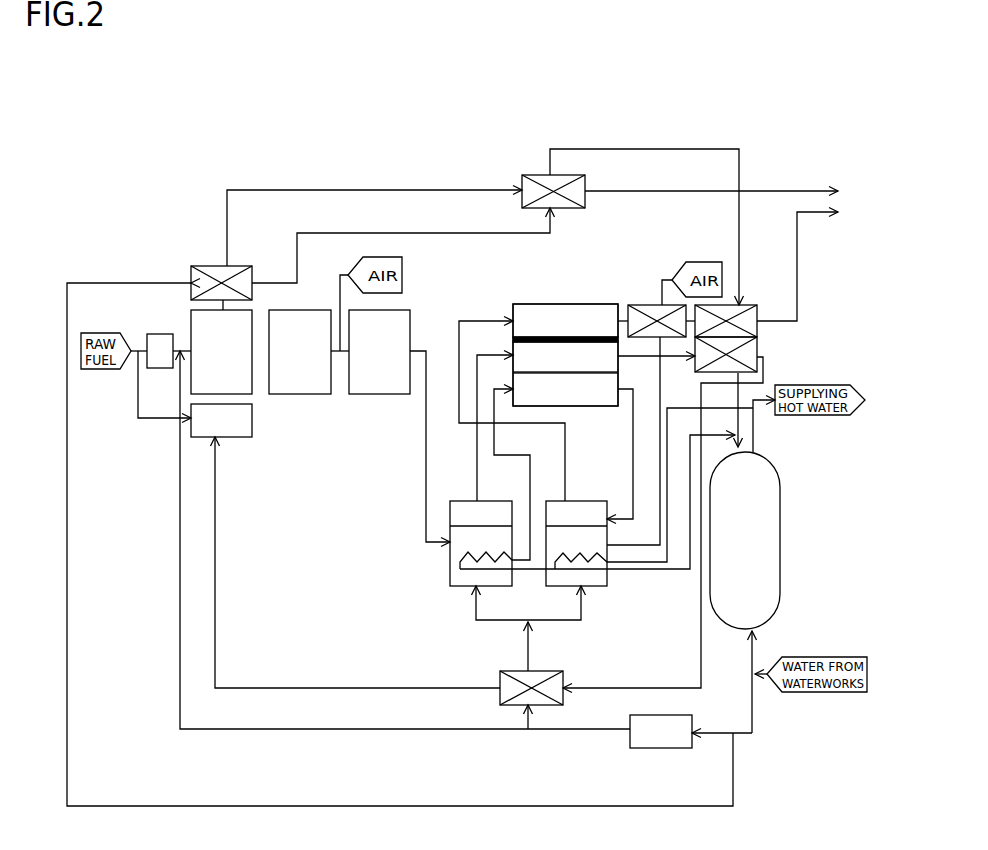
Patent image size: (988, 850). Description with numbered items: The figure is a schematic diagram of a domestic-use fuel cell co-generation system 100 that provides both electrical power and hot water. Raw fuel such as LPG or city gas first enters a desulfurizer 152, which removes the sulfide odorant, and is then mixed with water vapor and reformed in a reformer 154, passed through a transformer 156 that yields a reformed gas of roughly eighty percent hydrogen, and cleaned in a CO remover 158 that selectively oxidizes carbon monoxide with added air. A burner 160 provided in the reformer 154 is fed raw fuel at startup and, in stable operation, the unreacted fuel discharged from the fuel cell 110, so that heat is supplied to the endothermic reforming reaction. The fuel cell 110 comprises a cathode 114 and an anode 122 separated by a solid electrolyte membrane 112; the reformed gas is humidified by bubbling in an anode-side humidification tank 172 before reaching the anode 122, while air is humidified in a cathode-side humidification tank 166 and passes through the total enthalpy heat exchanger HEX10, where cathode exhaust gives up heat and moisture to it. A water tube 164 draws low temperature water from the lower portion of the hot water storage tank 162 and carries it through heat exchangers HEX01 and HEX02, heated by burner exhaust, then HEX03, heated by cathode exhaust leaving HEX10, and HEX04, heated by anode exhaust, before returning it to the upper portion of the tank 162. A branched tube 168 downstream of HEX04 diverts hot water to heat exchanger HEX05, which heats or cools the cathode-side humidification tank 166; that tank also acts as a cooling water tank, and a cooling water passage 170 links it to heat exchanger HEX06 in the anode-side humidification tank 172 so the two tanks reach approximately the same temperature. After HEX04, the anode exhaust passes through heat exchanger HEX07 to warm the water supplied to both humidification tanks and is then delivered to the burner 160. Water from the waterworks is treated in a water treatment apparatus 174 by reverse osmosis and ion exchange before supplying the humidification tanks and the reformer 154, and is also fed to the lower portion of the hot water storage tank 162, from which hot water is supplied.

The domestic-use fuel cell co-generation system 100 is at (176, 118).
The fuel cell 110 is at (590, 303).
The solid electrolyte membrane 112 is at (528, 336).
The cathode 114 is at (565, 321).
The anode 122 is at (565, 357).
The desulfurizer 152 is at (158, 345).
The reformer 154 is at (221, 352).
The transformer 156 is at (300, 352).
The CO remover 158 is at (379, 352).
The burner 160 is at (221, 420).
The hot water storage tank 162 is at (745, 540).
The water tube 164 is at (67, 710).
The cathode-side humidification tank 166 is at (600, 580).
The branched tube 168 is at (687, 590).
The cooling water passage 170 is at (565, 389).
The anode-side humidification tank 172 is at (459, 587).
The water treatment apparatus 174 is at (661, 732).
The heat exchanger HEX01 is at (200, 268).
The heat exchanger HEX02 is at (531, 180).
The heat exchanger HEX03 is at (730, 312).
The heat exchanger HEX04 is at (757, 320).
The heat exchanger HEX05 is at (590, 565).
The heat exchanger HEX06 is at (456, 565).
The heat exchanger HEX07 is at (500, 678).
The total enthalpy heat exchanger HEX10 is at (660, 312).